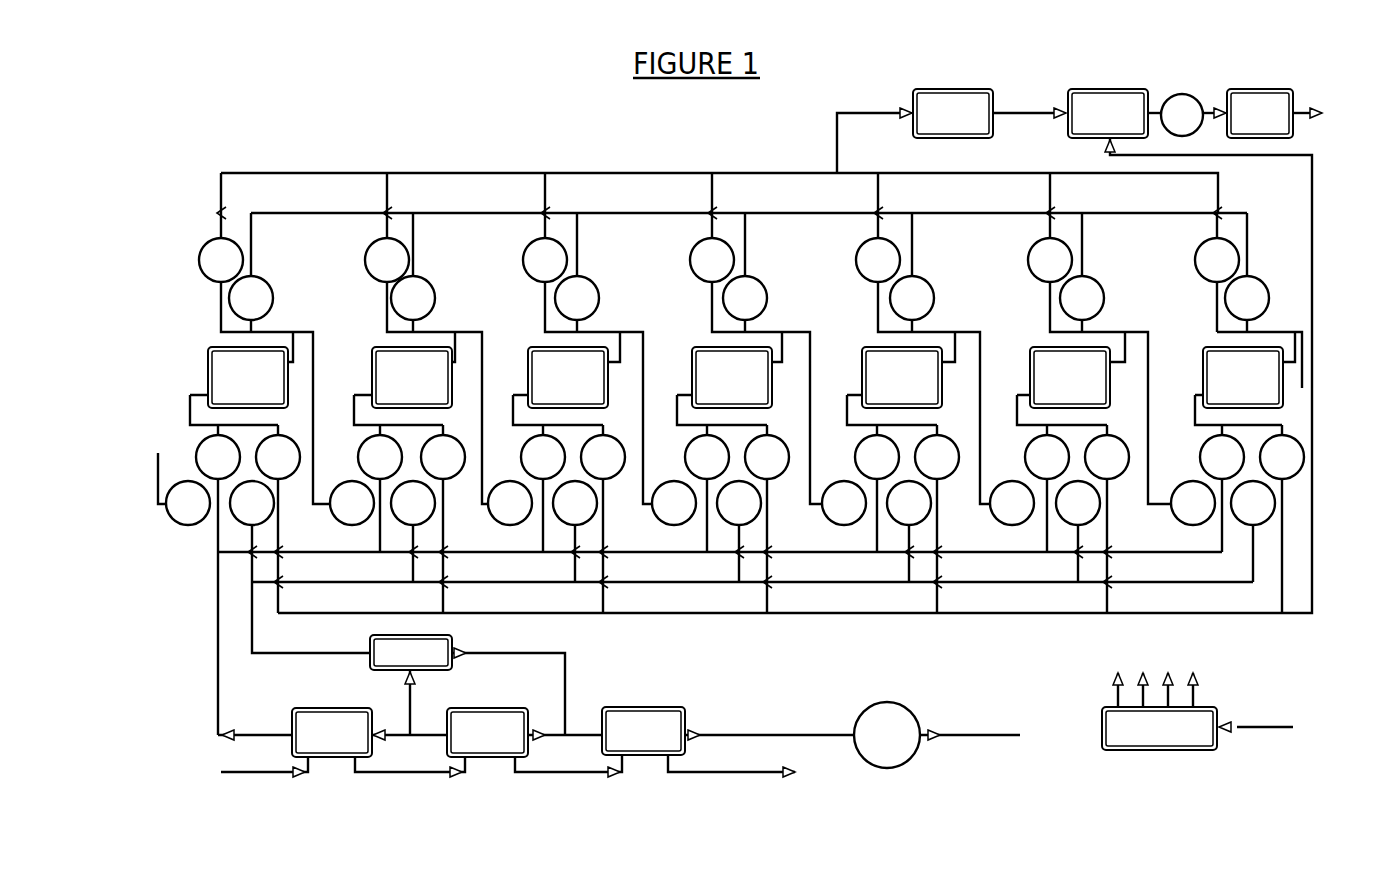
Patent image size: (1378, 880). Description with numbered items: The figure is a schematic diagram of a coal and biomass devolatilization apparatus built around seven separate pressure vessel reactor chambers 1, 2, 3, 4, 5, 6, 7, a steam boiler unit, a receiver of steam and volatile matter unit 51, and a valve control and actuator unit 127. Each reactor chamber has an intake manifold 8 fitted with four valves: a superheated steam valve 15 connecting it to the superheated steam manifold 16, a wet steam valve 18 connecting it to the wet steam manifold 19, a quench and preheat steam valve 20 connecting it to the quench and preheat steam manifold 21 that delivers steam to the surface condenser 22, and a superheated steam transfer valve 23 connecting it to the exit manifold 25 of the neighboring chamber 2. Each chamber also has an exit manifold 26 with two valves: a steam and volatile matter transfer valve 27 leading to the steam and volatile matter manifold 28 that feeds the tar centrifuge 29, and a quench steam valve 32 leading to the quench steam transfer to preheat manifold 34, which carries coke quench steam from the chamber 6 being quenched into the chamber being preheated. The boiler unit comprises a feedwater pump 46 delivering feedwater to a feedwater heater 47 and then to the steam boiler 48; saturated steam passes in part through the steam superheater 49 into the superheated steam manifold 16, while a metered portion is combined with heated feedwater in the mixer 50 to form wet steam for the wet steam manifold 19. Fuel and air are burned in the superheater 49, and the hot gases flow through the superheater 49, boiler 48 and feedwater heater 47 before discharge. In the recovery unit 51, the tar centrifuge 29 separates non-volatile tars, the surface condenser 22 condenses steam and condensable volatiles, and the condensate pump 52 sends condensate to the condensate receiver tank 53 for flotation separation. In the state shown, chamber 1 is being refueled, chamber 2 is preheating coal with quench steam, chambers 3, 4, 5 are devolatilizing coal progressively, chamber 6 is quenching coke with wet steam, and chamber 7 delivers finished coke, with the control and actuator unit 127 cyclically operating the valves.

The reactor chamber 1 is at (1270, 357).
The reactor chamber 2 is at (1017, 423).
The reactor chamber 3 is at (862, 343).
The reactor chamber 4 is at (692, 343).
The reactor chamber 5 is at (528, 343).
The reactor chamber 6 is at (380, 343).
The reactor chamber 7 is at (205, 380).
The intake manifold 8 is at (1277, 420).
The superheated steam valve 15 is at (1233, 458).
The superheated steam manifold 16 is at (1172, 552).
The wet steam valve 18 is at (1262, 505).
The wet steam manifold 19 is at (1218, 582).
The quench and preheat steam valve 20 is at (1283, 452).
The quench and preheat steam manifold 21 is at (1272, 613).
The surface condenser 22 is at (1117, 90).
The superheated steam transfer valve 23 is at (1200, 508).
The exit manifold 25 is at (1100, 327).
The exit manifold 26 is at (1263, 327).
The steam and volatile matter transfer valve 27 is at (1213, 258).
The steam and volatile matter manifold 28 is at (248, 170).
The tar centrifuge 29 is at (980, 87).
The quench steam valve 32 is at (1248, 300).
The quench steam transfer to preheat manifold 34 is at (304, 212).
The feedwater pump 46 is at (898, 763).
The feedwater heater 47 is at (640, 757).
The steam boiler 48 is at (483, 758).
The steam superheater 49 is at (330, 758).
The mixer 50 is at (370, 660).
The receiver of steam and volatile matter unit 51 is at (1340, 70).
The condensate pump 52 is at (1190, 93).
The condensate receiver tank 53 is at (1280, 88).
The valve control and actuator unit 127 is at (1217, 710).